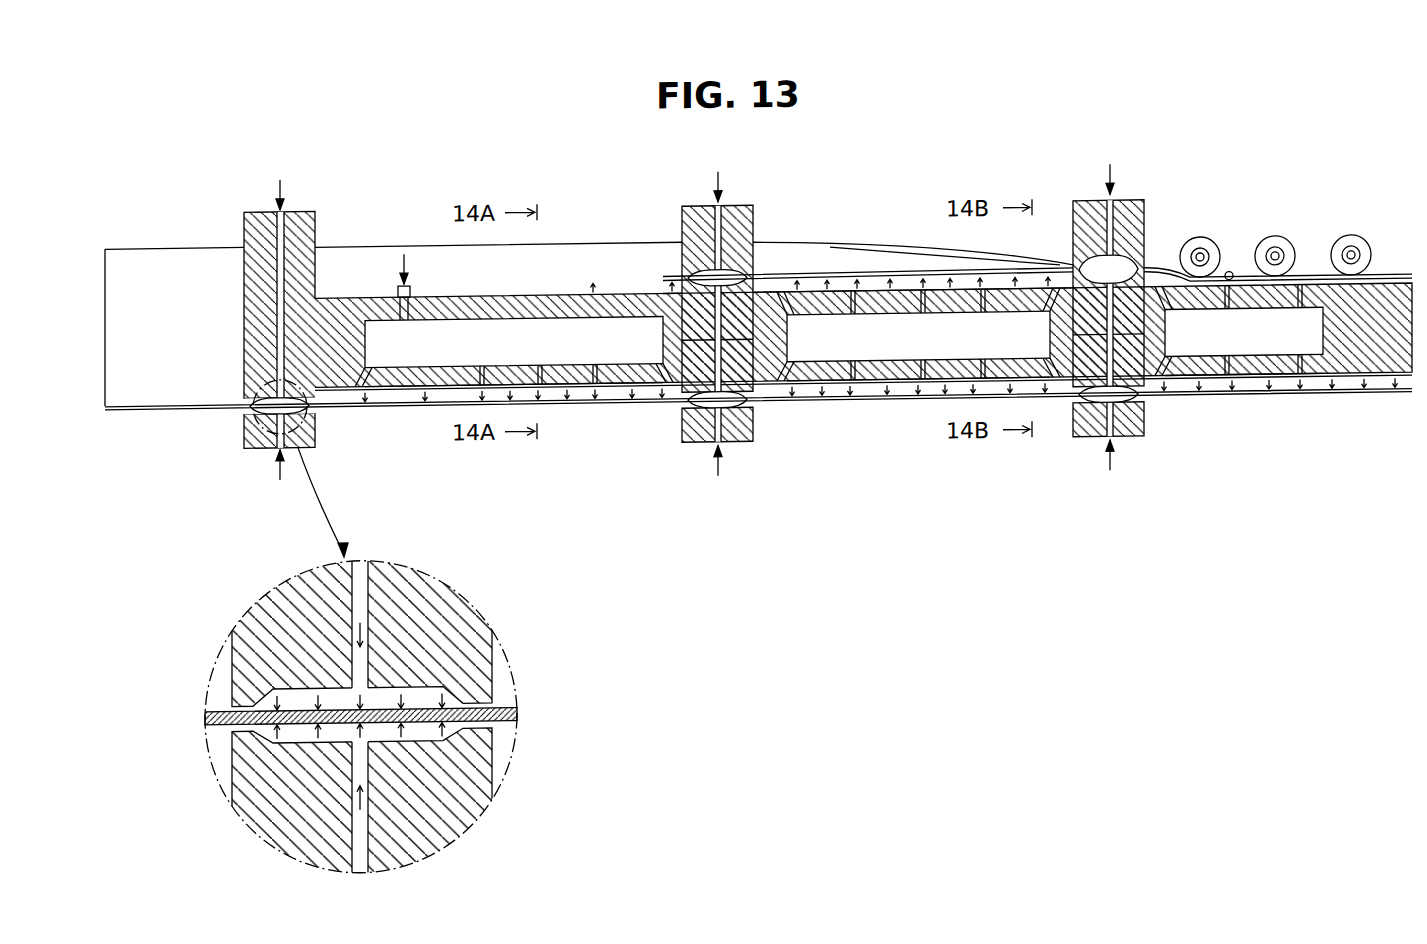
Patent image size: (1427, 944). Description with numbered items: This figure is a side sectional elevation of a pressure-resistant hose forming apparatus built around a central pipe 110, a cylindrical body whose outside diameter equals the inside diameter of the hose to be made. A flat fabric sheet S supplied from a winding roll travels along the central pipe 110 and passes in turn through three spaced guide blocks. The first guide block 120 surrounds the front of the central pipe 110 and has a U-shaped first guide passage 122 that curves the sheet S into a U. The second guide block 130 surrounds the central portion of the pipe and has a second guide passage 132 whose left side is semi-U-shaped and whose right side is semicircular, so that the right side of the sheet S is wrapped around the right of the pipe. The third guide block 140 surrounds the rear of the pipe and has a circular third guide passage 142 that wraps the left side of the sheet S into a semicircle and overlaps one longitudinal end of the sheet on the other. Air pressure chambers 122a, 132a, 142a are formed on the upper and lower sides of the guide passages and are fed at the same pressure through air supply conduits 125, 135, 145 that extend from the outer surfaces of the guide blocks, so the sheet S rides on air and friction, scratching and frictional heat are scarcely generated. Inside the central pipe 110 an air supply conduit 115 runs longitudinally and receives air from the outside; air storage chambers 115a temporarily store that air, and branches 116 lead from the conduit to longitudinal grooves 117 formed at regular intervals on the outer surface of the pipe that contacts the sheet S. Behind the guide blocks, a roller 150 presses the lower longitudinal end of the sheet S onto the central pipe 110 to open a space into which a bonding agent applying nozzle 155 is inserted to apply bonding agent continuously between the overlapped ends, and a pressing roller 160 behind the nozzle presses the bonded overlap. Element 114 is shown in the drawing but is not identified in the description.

The central pipe 110 is at (555, 298).
The air supply inlet 114 is at (398, 279).
The air supply conduit 115 is at (782, 301).
The air storage chambers 115a is at (450, 348).
The branches 116 is at (600, 384).
The longitudinal grooves 117 is at (930, 303).
The first guide block 120 is at (305, 210).
The first guide passage 122 is at (245, 424).
The air pressure chamber 122a is at (312, 407).
The air supply conduit 125 is at (265, 227).
The second guide block 130 is at (745, 216).
The second guide passage 132 is at (680, 276).
The air pressure chamber 132a is at (752, 291).
The air supply conduit 135 is at (707, 208).
The third guide block 140 is at (1128, 212).
The third guide passage 142 is at (1068, 270).
The air pressure chamber 142a is at (1150, 281).
The air supply conduit 145 is at (1103, 211).
The roller 150 is at (1205, 247).
The bonding agent applying nozzle 155 is at (1232, 280).
The pressing roller 160 is at (1351, 249).
The fabric sheet S is at (848, 270).